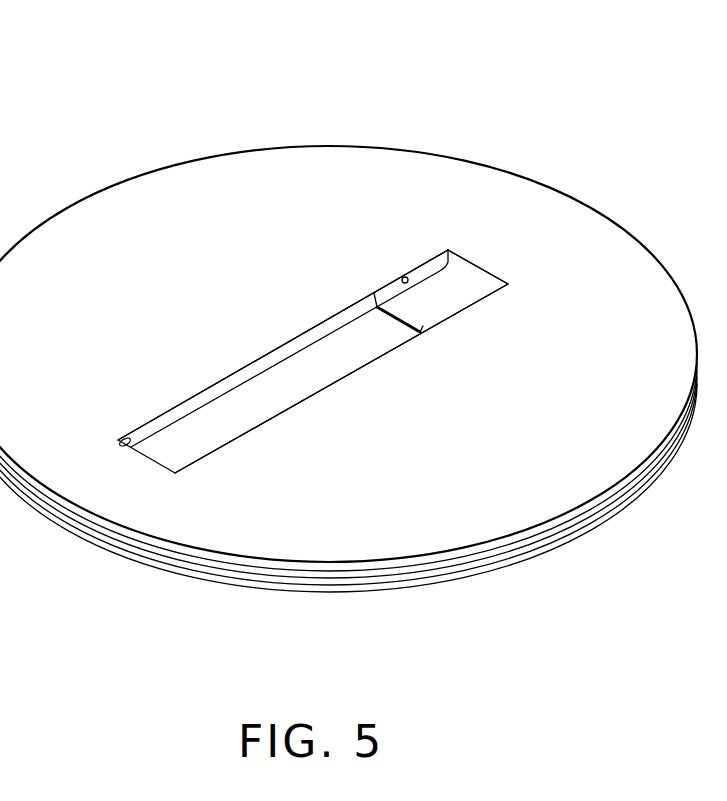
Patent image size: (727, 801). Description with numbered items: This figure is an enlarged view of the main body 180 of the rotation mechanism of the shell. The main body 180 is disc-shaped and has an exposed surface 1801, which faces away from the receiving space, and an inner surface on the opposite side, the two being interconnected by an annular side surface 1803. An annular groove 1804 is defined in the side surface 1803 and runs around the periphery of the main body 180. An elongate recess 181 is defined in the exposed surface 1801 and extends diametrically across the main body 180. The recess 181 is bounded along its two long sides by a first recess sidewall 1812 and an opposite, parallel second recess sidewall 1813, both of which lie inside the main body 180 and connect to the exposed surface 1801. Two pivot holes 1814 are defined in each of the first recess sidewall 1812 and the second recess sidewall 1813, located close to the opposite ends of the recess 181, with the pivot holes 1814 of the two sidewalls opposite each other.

The main body 180 is at (327, 140).
The exposed surface 1801 is at (428, 177).
The annular side surface 1803 is at (133, 549).
The annular groove 1804 is at (602, 512).
The elongate recess 181 is at (280, 383).
The first recess sidewall 1812 is at (213, 393).
The second recess sidewall 1813 is at (372, 358).
The pivot holes 1814 is at (452, 249).